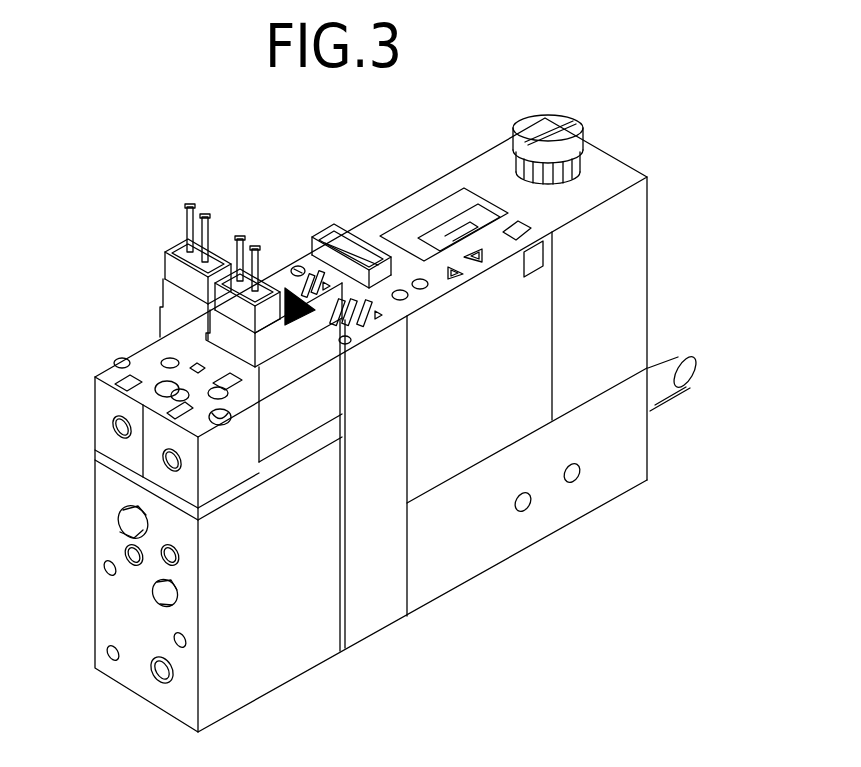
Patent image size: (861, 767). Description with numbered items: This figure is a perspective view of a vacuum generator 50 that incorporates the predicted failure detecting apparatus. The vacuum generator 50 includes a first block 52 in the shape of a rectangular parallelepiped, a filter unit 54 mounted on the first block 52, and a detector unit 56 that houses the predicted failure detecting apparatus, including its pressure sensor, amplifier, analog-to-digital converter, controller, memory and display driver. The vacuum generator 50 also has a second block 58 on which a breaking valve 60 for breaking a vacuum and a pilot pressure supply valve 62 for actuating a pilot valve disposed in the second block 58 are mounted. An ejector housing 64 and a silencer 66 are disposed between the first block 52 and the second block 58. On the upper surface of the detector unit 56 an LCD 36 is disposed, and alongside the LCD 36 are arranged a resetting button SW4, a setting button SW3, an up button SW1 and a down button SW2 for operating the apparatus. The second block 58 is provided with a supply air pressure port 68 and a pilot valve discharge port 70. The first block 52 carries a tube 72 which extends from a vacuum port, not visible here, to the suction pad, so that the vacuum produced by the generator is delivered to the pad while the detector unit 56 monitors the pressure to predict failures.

The vacuum generator 50 is at (607, 145).
The LCD 36 is at (436, 216).
The first block 52 is at (518, 537).
The filter unit 54 is at (620, 312).
The detector unit 56 is at (541, 402).
The second block 58 is at (310, 635).
The breaking valve 60 is at (273, 303).
The pilot pressure supply valve 62 is at (163, 266).
The ejector housing 64 is at (385, 602).
The silencer 66 is at (342, 228).
The supply air pressure port 68 is at (157, 673).
The pilot valve discharge port 70 is at (130, 547).
The tube 72 is at (673, 373).
The up button SW1 is at (463, 274).
The down button SW2 is at (485, 258).
The setting button SW3 is at (427, 289).
The resetting button SW4 is at (404, 300).